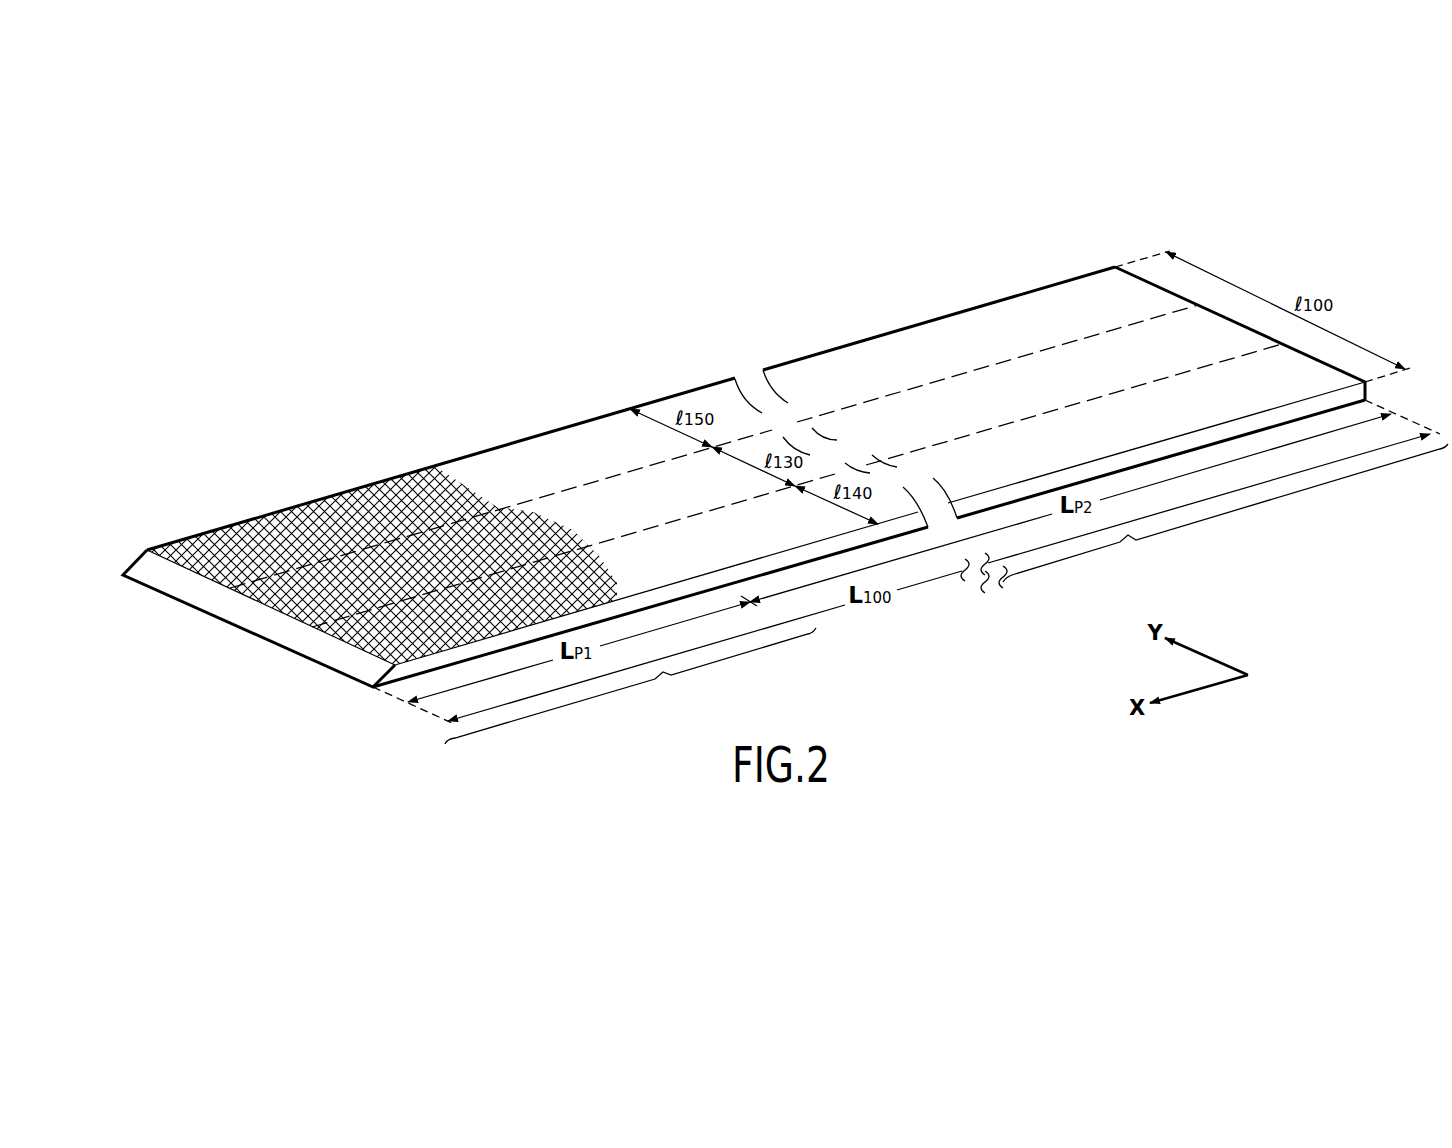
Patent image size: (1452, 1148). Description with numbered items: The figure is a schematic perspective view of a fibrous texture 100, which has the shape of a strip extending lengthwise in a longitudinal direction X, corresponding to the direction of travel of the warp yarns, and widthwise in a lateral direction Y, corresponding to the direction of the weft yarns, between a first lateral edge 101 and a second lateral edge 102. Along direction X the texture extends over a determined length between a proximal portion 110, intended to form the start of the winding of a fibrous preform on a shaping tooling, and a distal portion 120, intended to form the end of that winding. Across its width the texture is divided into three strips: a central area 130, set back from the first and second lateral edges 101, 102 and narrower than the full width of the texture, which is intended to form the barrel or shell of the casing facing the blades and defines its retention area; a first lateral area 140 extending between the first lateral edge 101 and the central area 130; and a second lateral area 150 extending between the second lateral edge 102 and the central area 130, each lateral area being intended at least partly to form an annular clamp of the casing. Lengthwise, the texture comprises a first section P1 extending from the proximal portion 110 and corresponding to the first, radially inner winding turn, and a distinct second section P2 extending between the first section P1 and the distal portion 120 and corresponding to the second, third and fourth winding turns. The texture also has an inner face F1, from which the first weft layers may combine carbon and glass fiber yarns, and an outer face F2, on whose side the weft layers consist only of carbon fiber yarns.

The fibrous texture 100 is at (486, 288).
The first lateral edge 101 is at (676, 589).
The second lateral edge 102 is at (457, 459).
The proximal portion 110 is at (348, 693).
The distal portion 120 is at (1097, 266).
The central area 130 is at (673, 507).
The first lateral area 140 is at (748, 542).
The second lateral area 150 is at (597, 463).
The inner face F1 is at (1014, 503).
The outer face F2 is at (886, 352).
The first section P1 is at (630, 686).
The second section P2 is at (1225, 513).